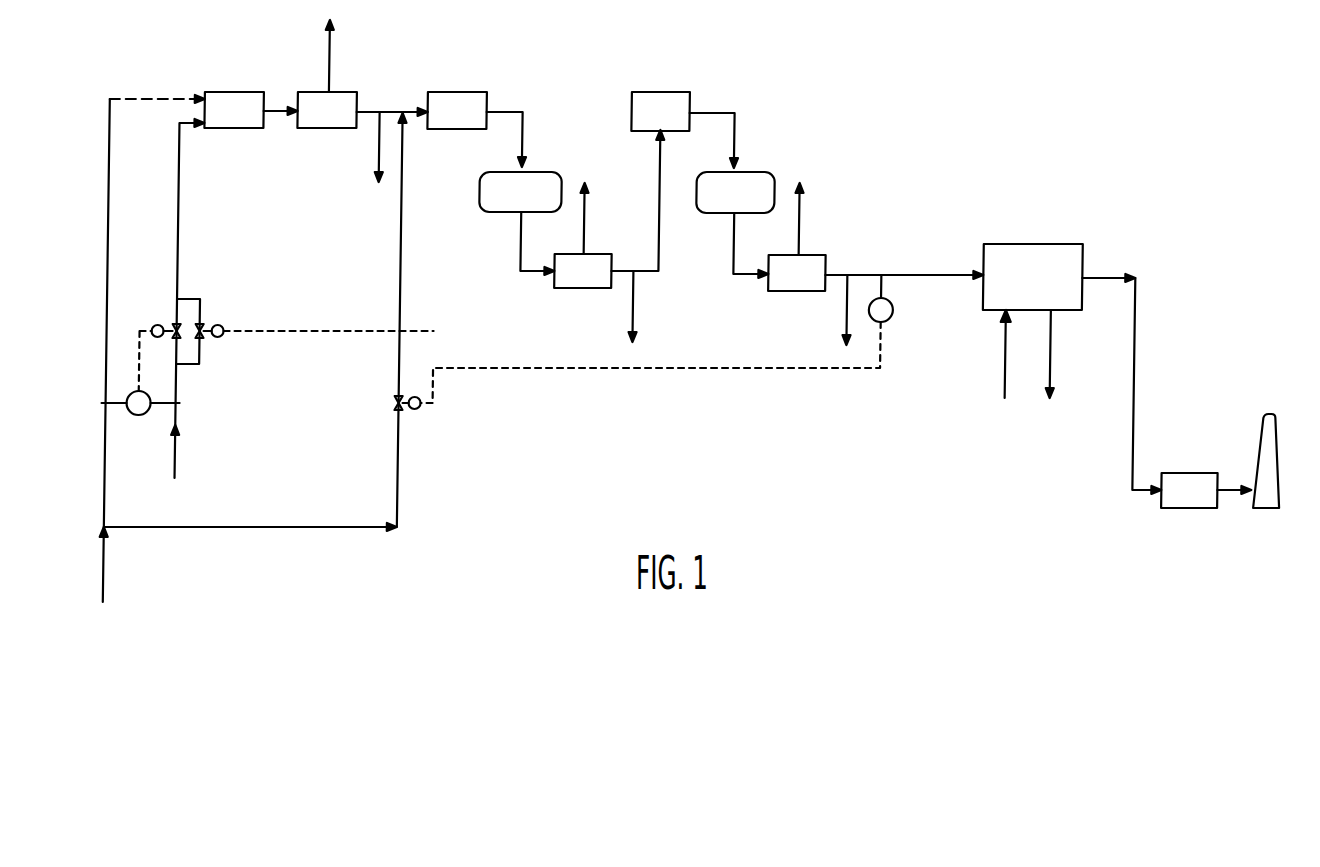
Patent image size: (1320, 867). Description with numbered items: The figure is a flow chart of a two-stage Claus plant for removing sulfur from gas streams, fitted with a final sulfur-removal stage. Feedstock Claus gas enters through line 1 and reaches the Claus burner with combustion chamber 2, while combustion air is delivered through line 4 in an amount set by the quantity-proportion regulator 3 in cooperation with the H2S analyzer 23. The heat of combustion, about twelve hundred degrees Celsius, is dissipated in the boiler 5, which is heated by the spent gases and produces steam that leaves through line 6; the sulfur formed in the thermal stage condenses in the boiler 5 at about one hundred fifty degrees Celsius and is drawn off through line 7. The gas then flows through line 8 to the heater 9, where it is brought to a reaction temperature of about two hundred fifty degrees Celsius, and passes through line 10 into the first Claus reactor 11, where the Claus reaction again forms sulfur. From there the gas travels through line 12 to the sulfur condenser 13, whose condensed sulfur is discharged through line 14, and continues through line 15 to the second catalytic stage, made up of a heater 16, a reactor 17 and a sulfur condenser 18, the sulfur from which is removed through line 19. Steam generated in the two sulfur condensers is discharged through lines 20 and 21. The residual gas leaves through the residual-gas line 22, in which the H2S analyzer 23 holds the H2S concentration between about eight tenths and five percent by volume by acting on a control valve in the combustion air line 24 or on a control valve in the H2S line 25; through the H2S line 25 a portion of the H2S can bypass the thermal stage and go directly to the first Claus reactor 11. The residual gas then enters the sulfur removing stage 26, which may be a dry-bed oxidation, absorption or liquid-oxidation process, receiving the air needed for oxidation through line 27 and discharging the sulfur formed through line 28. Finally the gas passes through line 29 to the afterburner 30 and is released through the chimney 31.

The line 1 is at (107, 560).
The Claus burner with combustion chamber 2 is at (243, 128).
The quantity-proportion regulator 3 is at (146, 415).
The line 4 is at (180, 200).
The boiler 5 is at (320, 128).
The line 6 is at (326, 58).
The line 7 is at (372, 140).
The line 8 is at (397, 98).
The heater 9 is at (458, 128).
The line 10 is at (504, 112).
The first Claus reactor 11 is at (498, 196).
The line 12 is at (520, 255).
The sulfur condenser 13 is at (567, 285).
The line 14 is at (633, 300).
The line 15 is at (658, 205).
The heater 16 is at (661, 100).
The reactor 17 is at (748, 186).
The sulfur condenser 18 is at (790, 290).
The line 19 is at (845, 320).
The line 20 is at (583, 225).
The line 21 is at (798, 225).
The residual-gas line 22 is at (862, 275).
The H2S analyzer 23 is at (888, 302).
The combustion air line 24 is at (200, 302).
The H2S line 25 is at (400, 305).
The sulfur removing stage 26 is at (1045, 250).
The line 27 is at (1004, 343).
The line 28 is at (1051, 352).
The line 29 is at (1135, 344).
The afterburner 30 is at (1196, 482).
The chimney 31 is at (1270, 495).